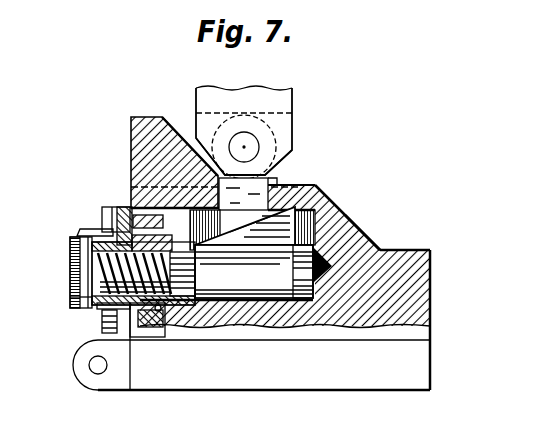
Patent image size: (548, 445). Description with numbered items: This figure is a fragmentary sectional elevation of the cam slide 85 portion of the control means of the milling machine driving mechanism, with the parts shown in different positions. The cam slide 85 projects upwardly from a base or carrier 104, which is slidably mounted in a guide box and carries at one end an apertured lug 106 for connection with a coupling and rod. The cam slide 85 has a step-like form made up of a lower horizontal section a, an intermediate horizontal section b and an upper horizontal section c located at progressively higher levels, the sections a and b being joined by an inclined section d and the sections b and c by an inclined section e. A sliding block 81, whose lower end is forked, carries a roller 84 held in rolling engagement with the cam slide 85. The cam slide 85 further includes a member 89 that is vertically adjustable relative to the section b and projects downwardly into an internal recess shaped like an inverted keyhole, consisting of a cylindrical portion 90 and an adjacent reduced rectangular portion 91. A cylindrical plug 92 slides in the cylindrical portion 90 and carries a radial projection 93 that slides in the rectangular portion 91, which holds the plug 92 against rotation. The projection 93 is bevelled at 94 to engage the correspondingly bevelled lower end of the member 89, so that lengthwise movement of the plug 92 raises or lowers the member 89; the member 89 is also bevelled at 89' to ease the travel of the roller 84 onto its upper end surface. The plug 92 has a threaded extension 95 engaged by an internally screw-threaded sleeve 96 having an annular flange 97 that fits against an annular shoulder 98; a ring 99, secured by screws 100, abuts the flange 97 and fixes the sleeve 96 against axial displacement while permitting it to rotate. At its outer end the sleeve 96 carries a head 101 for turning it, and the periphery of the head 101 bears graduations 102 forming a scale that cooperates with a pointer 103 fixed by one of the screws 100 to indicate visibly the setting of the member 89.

The lower horizontal section a is at (396, 250).
The intermediate horizontal section b is at (305, 184).
The upper horizontal section c is at (144, 116).
The inclined section d is at (357, 226).
The inclined section e is at (171, 125).
The sliding block 81 is at (292, 96).
The roller 84 is at (284, 158).
The cam slide 85 is at (423, 286).
The member 89 is at (243, 194).
The bevel 89' is at (295, 171).
The cylindrical portion 90 is at (304, 290).
The reduced rectangular portion 91 is at (324, 208).
The cylindrical plug 92 is at (263, 244).
The projection 93 is at (230, 239).
The bevelled surface 94 is at (277, 207).
The threaded extension 95 is at (101, 307).
The sleeve 96 is at (92, 258).
The annular flange 97 is at (146, 326).
The annular shoulder 98 is at (159, 308).
The ring 99 is at (127, 207).
The screws 100 is at (103, 214).
The head 101 is at (83, 309).
The graduations 102 is at (70, 258).
The pointer 103 is at (78, 232).
The base 104 is at (371, 379).
The apertured lug 106 is at (108, 389).